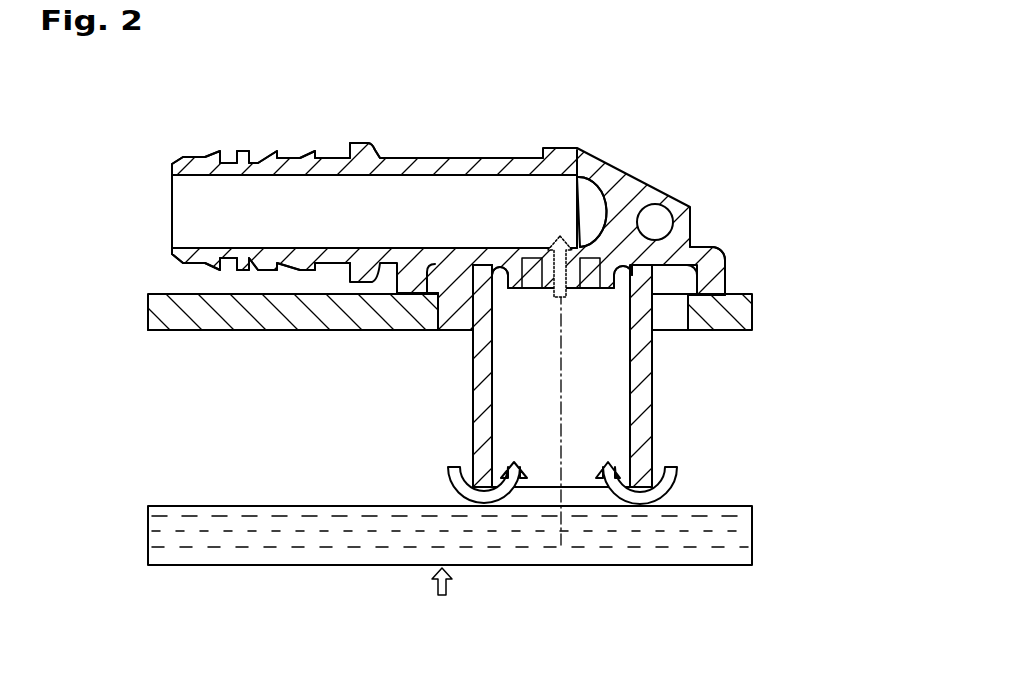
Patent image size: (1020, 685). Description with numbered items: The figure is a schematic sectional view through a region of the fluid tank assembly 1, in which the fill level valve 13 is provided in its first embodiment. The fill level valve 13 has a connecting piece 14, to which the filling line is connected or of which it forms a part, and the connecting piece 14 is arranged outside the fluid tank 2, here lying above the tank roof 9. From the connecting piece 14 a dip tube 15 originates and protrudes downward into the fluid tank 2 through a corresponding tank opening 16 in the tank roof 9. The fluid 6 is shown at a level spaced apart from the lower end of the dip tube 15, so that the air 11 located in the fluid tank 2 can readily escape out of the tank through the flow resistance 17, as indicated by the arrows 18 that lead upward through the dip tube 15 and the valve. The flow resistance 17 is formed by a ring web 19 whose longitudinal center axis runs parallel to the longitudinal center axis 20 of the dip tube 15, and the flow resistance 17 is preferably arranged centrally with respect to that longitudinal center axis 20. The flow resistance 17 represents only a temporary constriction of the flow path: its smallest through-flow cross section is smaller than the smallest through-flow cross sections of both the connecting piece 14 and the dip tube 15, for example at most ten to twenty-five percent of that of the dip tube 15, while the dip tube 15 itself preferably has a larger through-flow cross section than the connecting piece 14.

The fluid tank assembly 1 is at (668, 98).
The fluid tank 2 is at (750, 282).
The fluid 6 is at (273, 525).
The tank roof 9 is at (225, 320).
The air 11 is at (365, 417).
The fill level valve 13 is at (670, 167).
The connecting piece 14 is at (258, 158).
The dip tube 15 is at (640, 370).
The tank opening 16 is at (458, 330).
The flow resistance 17 is at (586, 226).
The arrows 18 is at (581, 233).
The ring web 19 is at (530, 250).
The longitudinal center axis 20 is at (565, 403).